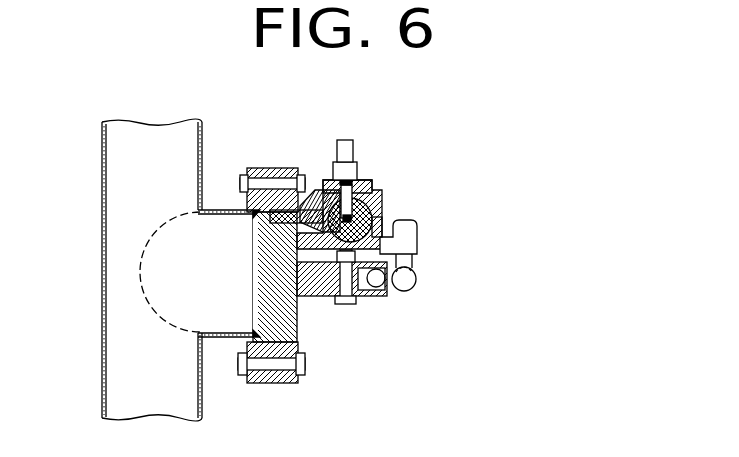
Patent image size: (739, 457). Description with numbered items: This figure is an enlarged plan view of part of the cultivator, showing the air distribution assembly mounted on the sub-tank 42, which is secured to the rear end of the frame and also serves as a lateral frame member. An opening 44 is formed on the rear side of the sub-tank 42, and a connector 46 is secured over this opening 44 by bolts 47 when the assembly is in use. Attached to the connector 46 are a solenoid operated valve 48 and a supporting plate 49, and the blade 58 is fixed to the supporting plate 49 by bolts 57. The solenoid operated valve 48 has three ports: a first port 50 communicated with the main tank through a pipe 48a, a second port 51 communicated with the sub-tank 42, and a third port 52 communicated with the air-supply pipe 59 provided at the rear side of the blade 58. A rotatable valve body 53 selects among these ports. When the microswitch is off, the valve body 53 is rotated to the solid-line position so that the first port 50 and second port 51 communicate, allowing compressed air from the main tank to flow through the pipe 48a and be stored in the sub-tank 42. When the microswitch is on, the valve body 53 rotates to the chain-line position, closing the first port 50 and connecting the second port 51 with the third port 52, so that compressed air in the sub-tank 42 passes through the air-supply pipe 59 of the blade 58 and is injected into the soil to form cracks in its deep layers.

The sub-tank 42 is at (138, 193).
The opening 44 is at (226, 214).
The connector 46 is at (257, 292).
The bolts 47 is at (239, 176).
The solenoid operated valve 48 is at (382, 204).
The pipe 48a is at (358, 153).
The supporting plate 49 is at (317, 298).
The first port 50 is at (371, 182).
The second port 51 is at (316, 192).
The third port 52 is at (394, 220).
The valve body 53 is at (383, 195).
The bolts 57 is at (345, 304).
The blade 58 is at (385, 292).
The air-supply pipe 59 is at (418, 278).